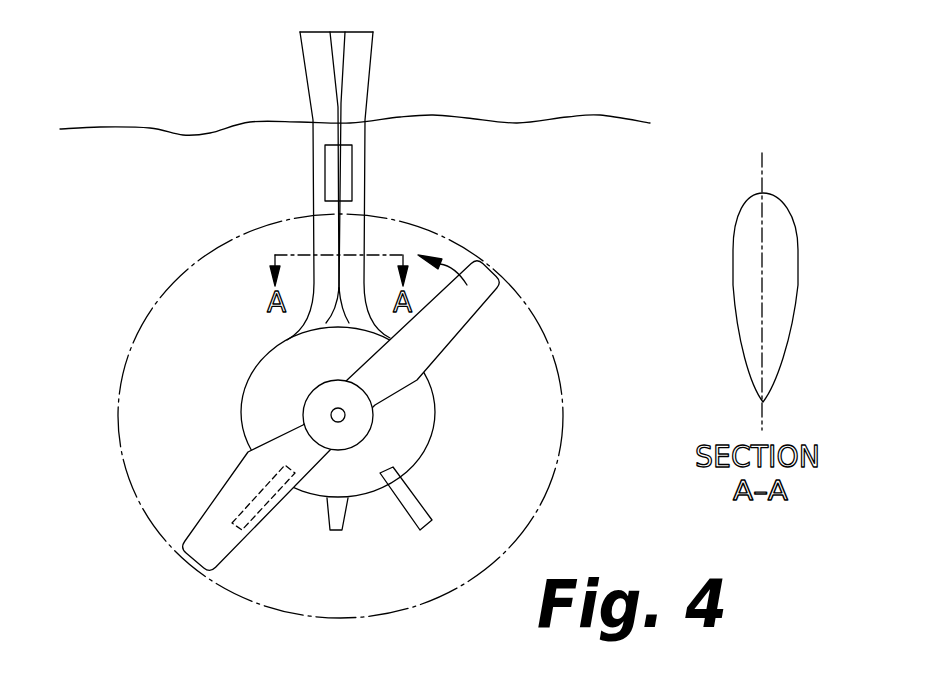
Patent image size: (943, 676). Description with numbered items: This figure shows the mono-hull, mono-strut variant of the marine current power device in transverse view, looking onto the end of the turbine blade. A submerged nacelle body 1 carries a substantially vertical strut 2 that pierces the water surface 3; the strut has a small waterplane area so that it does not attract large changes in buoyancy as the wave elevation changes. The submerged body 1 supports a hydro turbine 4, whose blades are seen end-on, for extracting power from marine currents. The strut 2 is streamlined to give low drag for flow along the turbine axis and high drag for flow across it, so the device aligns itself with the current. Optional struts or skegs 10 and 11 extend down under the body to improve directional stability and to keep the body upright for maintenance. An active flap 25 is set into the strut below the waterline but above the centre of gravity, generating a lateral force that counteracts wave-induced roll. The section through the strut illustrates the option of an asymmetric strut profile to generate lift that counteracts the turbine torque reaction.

The submerged nacelle body 1 is at (435, 433).
The vertical strut 2 is at (304, 227).
The water surface 3 is at (605, 118).
The hydro turbine 4 is at (462, 327).
The struts or skegs 10 is at (260, 508).
The struts or skegs 11 is at (343, 518).
The active flap 25 is at (353, 172).